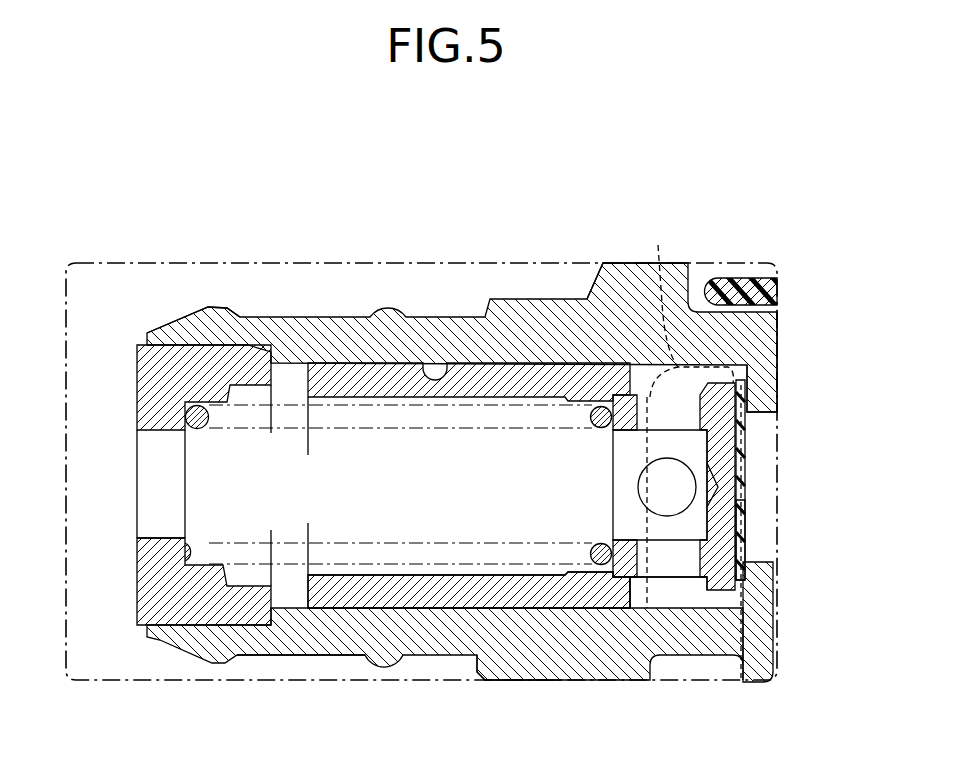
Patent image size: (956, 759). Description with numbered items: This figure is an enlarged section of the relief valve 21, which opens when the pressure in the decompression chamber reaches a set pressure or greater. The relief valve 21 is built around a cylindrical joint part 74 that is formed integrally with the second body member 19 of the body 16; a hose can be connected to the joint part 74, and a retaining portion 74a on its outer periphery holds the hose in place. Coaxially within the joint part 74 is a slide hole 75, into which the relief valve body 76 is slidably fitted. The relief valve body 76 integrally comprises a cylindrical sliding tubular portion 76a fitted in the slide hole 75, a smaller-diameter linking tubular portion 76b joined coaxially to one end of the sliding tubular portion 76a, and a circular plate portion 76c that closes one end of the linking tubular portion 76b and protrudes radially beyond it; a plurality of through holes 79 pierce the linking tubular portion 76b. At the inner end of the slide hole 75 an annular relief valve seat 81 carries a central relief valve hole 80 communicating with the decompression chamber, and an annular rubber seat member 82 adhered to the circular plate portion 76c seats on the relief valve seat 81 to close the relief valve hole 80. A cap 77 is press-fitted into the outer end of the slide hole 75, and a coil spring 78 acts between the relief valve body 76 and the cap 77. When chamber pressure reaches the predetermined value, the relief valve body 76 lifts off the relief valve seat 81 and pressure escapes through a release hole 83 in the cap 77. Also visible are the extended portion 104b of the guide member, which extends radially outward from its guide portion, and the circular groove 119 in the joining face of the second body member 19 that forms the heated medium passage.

The body 16 is at (585, 288).
The second body member 19 is at (491, 664).
The relief valve 21 is at (292, 658).
The joint part 74 is at (317, 328).
The retaining portion 74a is at (215, 306).
The slide hole 75 is at (445, 365).
The relief valve body 76 is at (347, 610).
The sliding tubular portion 76a is at (555, 592).
The linking tubular portion 76b is at (658, 578).
The circular plate portion 76c is at (718, 382).
The cap 77 is at (168, 403).
The coil spring 78 is at (590, 553).
The through holes 79 is at (660, 467).
The relief valve hole 80 is at (760, 413).
The relief valve seat 81 is at (722, 565).
The seat member 82 is at (745, 395).
The release hole 83 is at (168, 538).
The extended portion 104b is at (717, 285).
The circular groove 119 is at (684, 415).